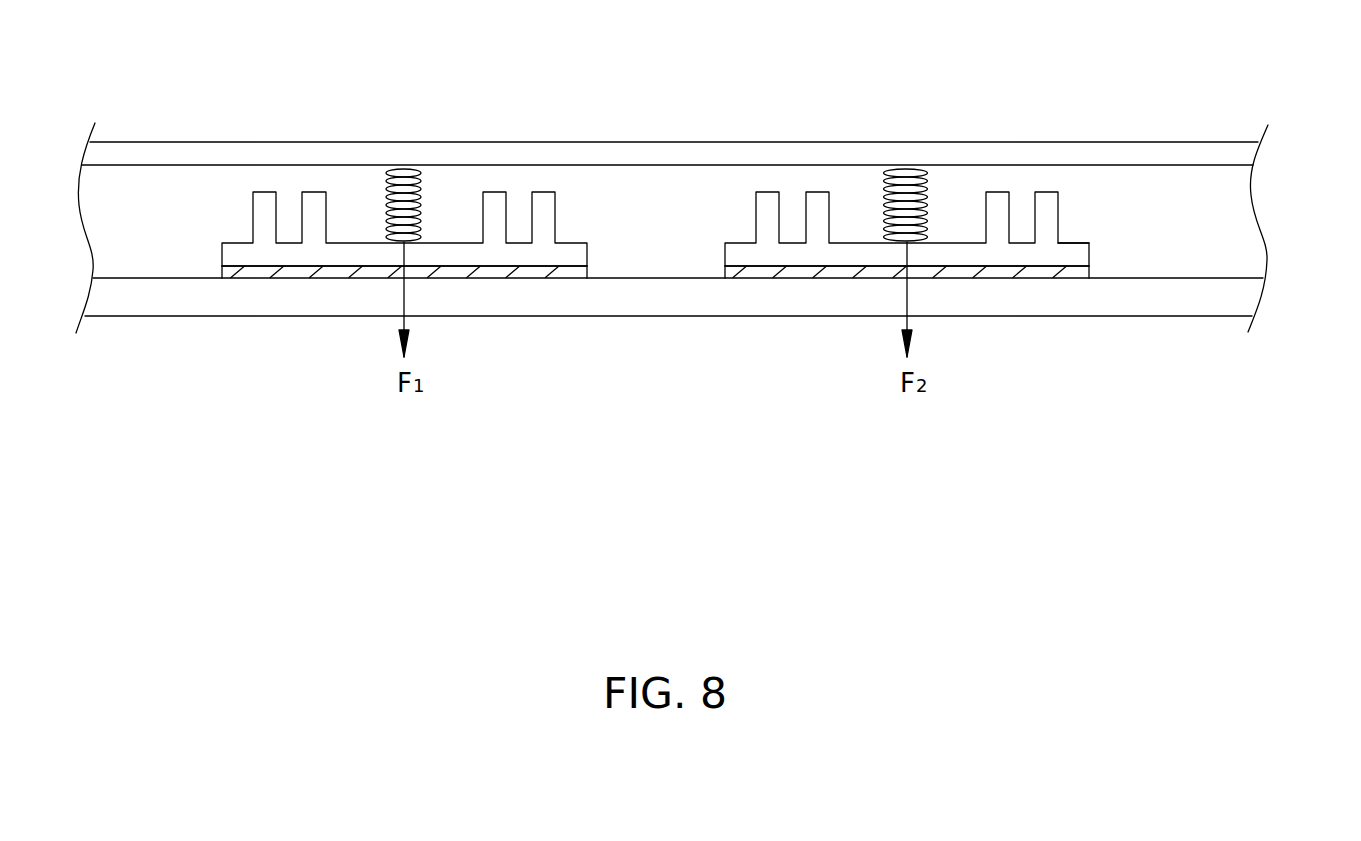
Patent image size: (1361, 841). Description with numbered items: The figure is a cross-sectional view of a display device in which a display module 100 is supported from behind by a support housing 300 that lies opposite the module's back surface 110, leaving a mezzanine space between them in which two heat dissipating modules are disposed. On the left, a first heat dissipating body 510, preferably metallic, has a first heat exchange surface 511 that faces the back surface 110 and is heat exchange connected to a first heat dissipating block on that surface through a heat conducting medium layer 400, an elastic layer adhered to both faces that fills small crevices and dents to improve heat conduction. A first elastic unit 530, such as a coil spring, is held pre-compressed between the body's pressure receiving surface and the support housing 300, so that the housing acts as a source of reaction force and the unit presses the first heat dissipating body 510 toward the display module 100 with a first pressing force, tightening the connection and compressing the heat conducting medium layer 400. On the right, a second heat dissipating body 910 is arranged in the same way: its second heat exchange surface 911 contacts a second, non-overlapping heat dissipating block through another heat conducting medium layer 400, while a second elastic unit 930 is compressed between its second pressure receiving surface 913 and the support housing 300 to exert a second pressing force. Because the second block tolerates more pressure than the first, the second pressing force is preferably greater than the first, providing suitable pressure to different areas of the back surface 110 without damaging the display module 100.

The display module 100 is at (1180, 298).
The back surface 110 is at (1207, 278).
The support housing 300 is at (1208, 150).
The heat conducting medium layer 400 is at (243, 270).
The first heat dissipating body 510 is at (358, 253).
The first heat exchange surface 511 is at (292, 267).
The first elastic unit 530 is at (388, 174).
The second heat dissipating body 910 is at (967, 253).
The second heat exchange surface 911 is at (1012, 268).
The second pressure receiving surface 913 is at (1073, 242).
The second elastic unit 930 is at (927, 180).